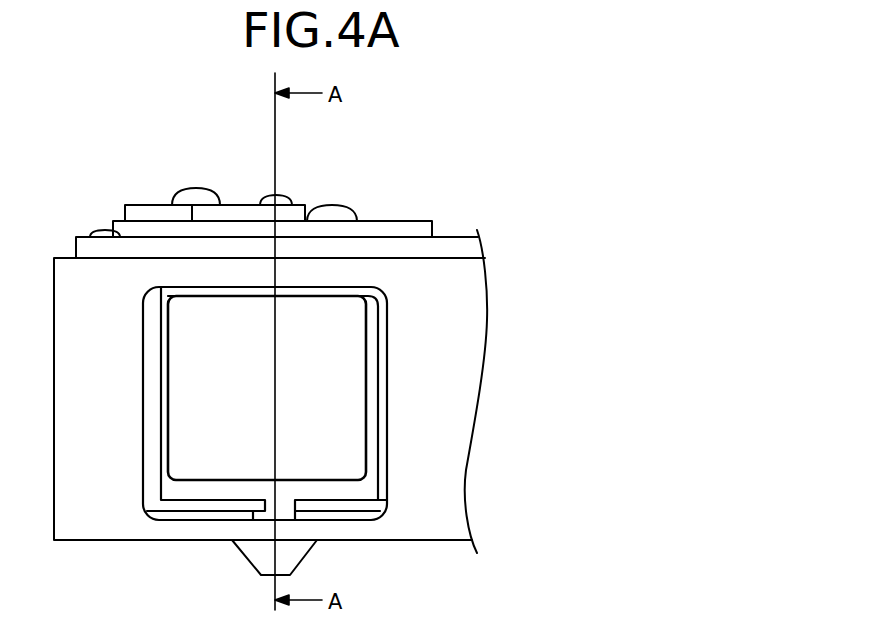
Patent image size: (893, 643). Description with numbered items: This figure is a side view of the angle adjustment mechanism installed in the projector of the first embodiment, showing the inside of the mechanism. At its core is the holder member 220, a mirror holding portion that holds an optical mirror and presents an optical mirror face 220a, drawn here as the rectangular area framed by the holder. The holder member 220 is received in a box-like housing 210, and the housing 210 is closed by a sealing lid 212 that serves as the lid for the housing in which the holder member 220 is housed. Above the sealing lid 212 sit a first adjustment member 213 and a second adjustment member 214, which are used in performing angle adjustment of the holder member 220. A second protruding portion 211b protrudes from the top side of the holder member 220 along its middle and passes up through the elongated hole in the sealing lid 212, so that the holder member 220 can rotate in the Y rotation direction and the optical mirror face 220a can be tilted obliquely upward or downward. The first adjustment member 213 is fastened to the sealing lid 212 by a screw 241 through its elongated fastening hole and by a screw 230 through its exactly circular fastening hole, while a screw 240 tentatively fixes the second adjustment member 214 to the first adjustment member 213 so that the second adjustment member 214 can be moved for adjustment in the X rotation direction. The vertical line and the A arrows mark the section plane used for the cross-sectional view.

The housing 210 is at (98, 520).
The sealing lid 212 is at (470, 235).
The first adjustment member 213 is at (413, 220).
The second adjustment member 214 is at (240, 212).
The screw 230 is at (148, 213).
The screw 240 is at (193, 190).
The screw 241 is at (347, 220).
The second protruding portion 211b is at (292, 196).
The holder member 220 is at (378, 331).
The optical mirror face 220a is at (328, 395).